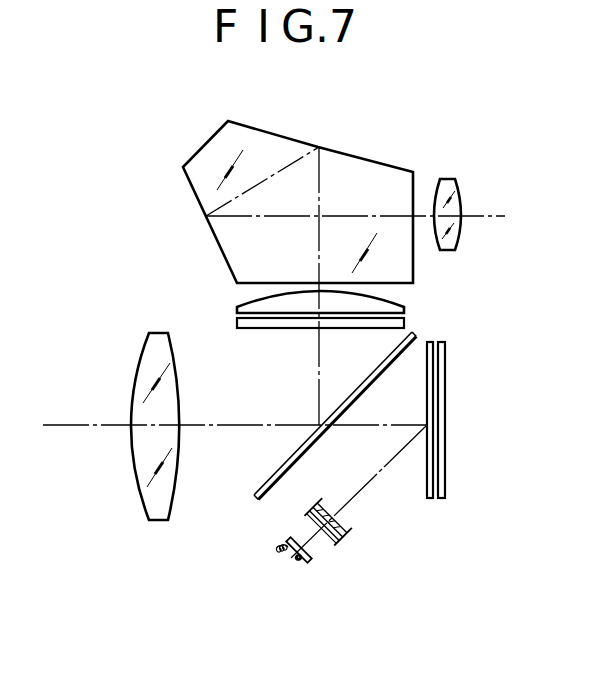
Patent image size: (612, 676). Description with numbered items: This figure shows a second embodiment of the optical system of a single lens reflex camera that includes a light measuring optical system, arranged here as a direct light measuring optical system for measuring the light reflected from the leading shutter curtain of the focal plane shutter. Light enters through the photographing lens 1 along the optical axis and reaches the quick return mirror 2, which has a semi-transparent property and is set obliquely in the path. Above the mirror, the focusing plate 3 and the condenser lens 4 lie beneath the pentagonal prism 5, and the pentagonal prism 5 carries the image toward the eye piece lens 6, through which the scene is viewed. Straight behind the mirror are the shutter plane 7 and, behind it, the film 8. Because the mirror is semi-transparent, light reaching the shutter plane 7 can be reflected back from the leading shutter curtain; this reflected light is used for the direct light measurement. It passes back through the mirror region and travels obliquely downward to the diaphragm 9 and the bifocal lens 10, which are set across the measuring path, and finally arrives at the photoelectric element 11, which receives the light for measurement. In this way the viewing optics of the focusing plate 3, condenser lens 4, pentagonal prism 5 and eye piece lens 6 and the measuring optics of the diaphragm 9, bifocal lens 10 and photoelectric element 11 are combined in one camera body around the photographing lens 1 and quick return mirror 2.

The photographing lens 1 is at (154, 340).
The quick return mirror 2 is at (255, 500).
The focusing plate 3 is at (237, 322).
The condenser lens 4 is at (240, 306).
The pentagonal prism 5 is at (287, 148).
The eye piece lens 6 is at (448, 180).
The shutter plane 7 is at (431, 342).
The film 8 is at (442, 342).
The diaphragm 9 is at (347, 530).
The bifocal lens 10 is at (333, 543).
The photoelectric element 11 is at (308, 561).